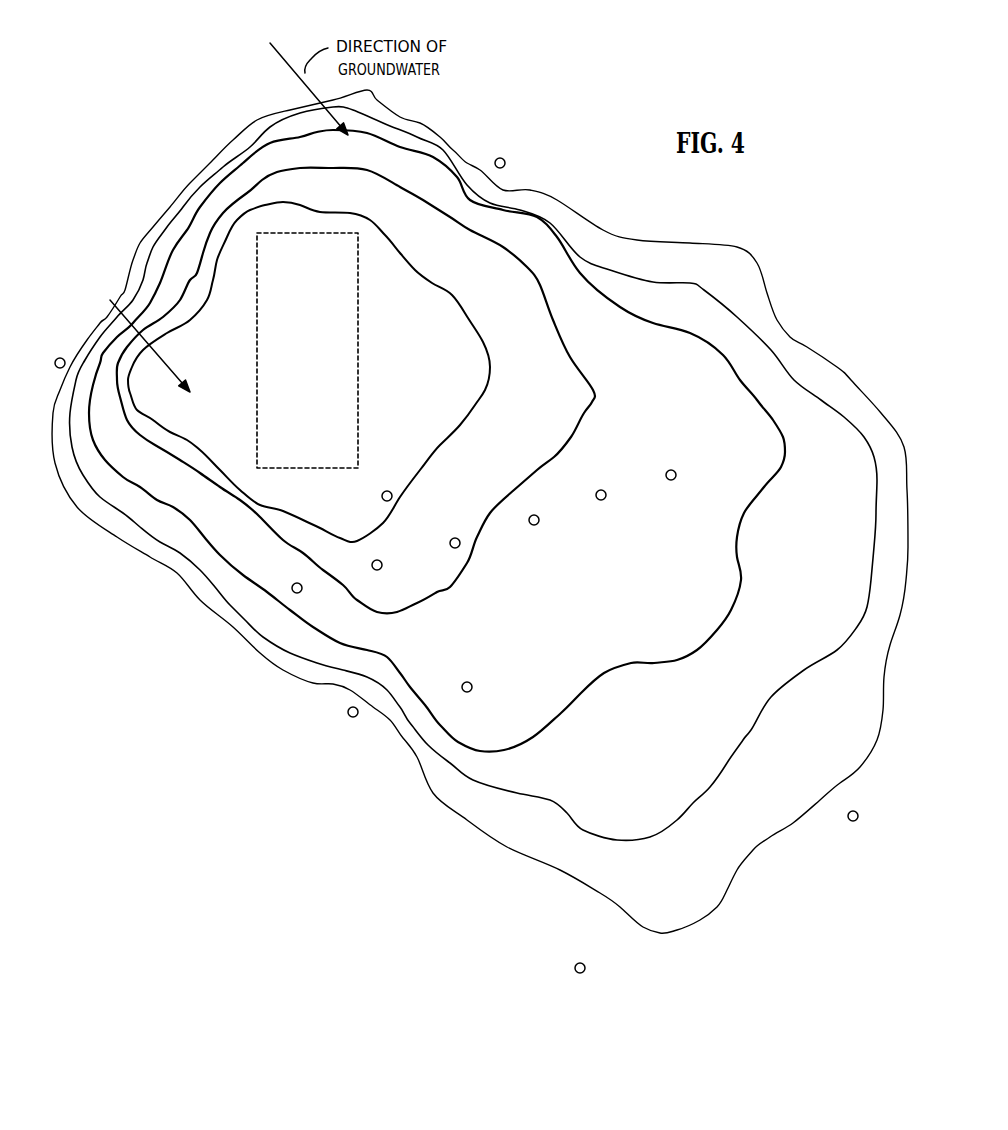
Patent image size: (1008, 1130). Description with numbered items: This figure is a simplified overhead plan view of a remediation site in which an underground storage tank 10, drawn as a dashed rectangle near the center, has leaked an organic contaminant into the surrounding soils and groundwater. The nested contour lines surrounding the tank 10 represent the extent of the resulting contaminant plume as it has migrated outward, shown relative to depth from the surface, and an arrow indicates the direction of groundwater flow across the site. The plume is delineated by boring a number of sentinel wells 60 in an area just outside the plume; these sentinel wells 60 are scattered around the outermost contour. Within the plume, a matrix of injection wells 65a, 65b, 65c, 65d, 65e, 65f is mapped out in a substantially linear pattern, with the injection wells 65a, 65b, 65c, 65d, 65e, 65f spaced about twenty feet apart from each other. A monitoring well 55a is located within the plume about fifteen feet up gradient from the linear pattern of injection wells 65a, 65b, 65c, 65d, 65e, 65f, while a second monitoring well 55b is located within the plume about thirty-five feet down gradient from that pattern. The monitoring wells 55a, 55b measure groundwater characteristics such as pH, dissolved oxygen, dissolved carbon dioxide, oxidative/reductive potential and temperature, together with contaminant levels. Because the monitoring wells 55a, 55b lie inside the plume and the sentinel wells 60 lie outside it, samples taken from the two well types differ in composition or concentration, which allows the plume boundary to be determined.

The underground storage tank 10 is at (307, 365).
The monitoring well 55a is at (388, 491).
The monitoring well 55b is at (469, 682).
The sentinel wells 60 is at (60, 358).
The injection well 65a is at (298, 593).
The injection well 65b is at (377, 570).
The injection well 65c is at (457, 538).
The injection well 65d is at (534, 525).
The injection well 65e is at (601, 500).
The injection well 65f is at (670, 480).